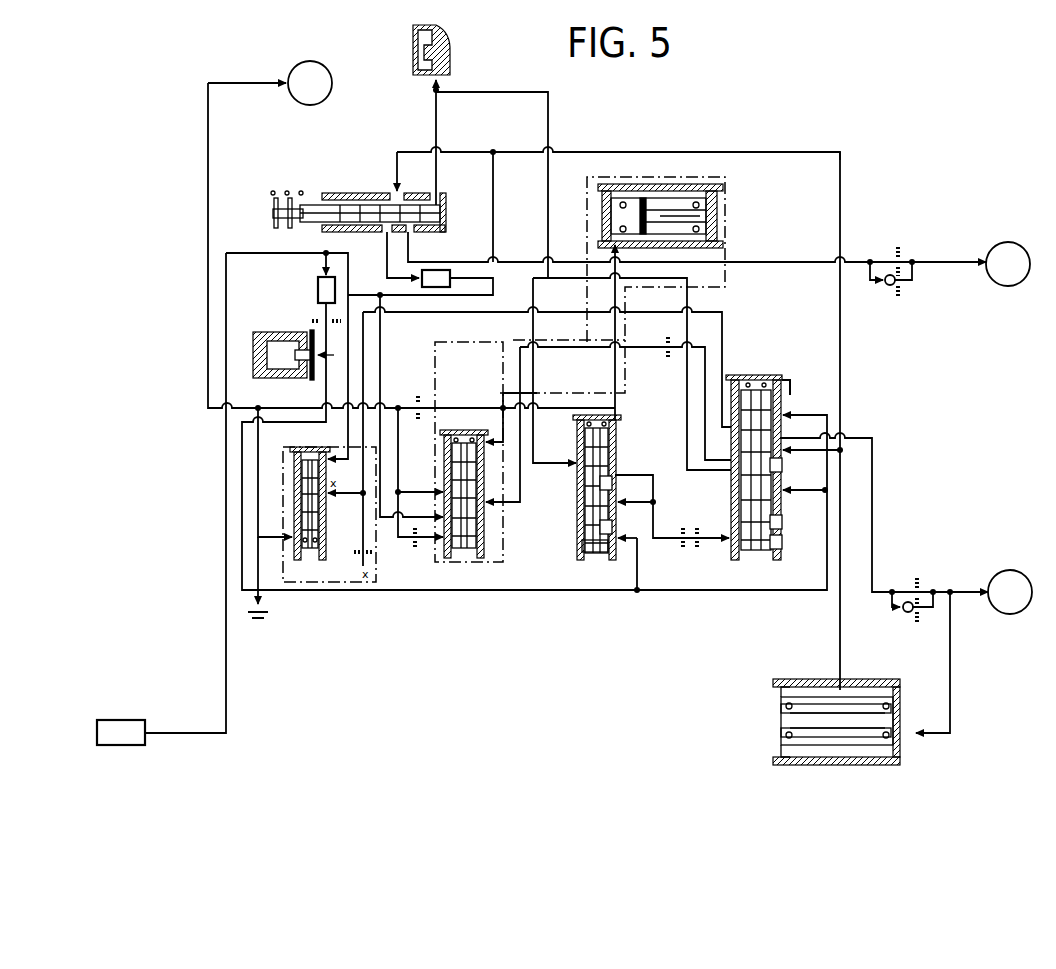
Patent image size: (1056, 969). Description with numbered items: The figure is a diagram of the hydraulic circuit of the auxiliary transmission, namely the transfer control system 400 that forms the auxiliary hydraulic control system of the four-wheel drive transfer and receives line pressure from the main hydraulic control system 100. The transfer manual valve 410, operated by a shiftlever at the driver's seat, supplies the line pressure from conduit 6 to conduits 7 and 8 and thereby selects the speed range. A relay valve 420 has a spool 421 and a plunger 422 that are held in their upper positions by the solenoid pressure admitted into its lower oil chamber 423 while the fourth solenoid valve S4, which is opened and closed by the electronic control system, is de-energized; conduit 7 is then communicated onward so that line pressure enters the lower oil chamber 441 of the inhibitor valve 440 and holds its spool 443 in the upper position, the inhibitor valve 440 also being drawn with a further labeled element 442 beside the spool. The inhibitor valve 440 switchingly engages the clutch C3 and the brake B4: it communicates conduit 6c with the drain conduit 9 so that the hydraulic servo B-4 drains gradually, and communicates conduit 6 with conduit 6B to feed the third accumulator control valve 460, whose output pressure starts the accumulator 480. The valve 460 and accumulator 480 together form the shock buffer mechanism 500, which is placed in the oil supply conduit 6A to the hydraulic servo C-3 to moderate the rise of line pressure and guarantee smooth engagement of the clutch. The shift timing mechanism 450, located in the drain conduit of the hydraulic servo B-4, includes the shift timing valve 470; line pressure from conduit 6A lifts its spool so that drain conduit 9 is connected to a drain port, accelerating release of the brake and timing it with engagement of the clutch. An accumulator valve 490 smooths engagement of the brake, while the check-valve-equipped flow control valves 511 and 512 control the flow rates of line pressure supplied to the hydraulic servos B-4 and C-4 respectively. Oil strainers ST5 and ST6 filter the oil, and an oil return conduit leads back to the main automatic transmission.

The conduit 6 is at (493, 152).
The oil supply conduit 6A is at (458, 408).
The conduit 6B is at (614, 348).
The conduit 6c is at (873, 495).
The conduit 7 is at (387, 258).
The conduit 8 is at (412, 250).
The drain conduit 9 is at (518, 312).
The main hydraulic control system 100 is at (122, 728).
The transfer control system 400 is at (855, 186).
The transfer manual valve 410 is at (360, 188).
The relay valve 420 is at (585, 569).
The spool 421 is at (617, 483).
The plunger 422 is at (617, 527).
The lower oil chamber 423 is at (578, 549).
The inhibitor valve 440 is at (738, 569).
The lower oil chamber 441 is at (782, 540).
The port 442 is at (782, 522).
The spool 443 is at (782, 465).
The shift timing mechanism 450 is at (359, 589).
The third accumulator control valve 460 is at (460, 569).
The shift timing valve 470 is at (314, 567).
The accumulator 480 is at (662, 182).
The accumulator valve 490 is at (764, 729).
The shock buffer mechanism 500 is at (737, 195).
The check-valve-equipped flow control valve 511 is at (920, 604).
The check-valve-equipped flow control valve 512 is at (900, 282).
The oil strainer ST5 is at (318, 290).
The oil strainer ST6 is at (436, 288).
The fourth solenoid valve S4 is at (276, 335).
The hydraulic servo C-3 is at (270, 83).
The hydraulic servo C-4 is at (1008, 264).
The hydraulic servo B-4 is at (1010, 592).